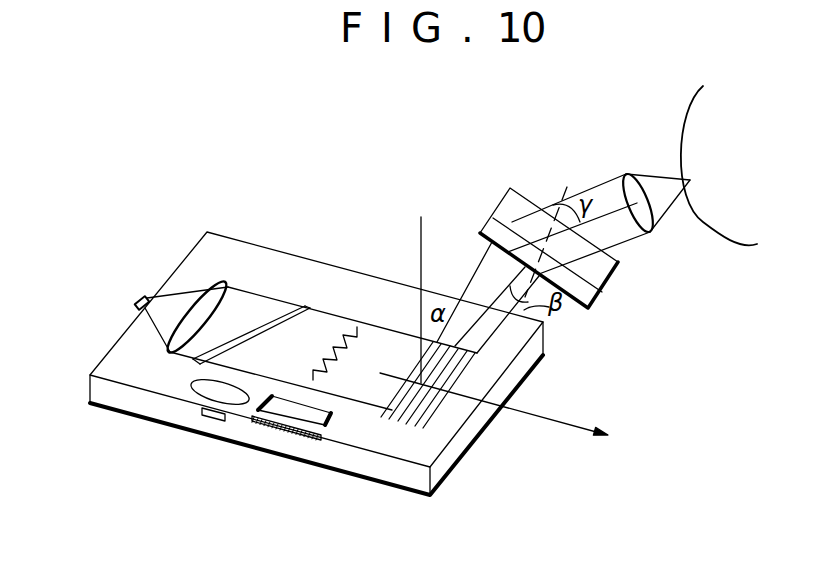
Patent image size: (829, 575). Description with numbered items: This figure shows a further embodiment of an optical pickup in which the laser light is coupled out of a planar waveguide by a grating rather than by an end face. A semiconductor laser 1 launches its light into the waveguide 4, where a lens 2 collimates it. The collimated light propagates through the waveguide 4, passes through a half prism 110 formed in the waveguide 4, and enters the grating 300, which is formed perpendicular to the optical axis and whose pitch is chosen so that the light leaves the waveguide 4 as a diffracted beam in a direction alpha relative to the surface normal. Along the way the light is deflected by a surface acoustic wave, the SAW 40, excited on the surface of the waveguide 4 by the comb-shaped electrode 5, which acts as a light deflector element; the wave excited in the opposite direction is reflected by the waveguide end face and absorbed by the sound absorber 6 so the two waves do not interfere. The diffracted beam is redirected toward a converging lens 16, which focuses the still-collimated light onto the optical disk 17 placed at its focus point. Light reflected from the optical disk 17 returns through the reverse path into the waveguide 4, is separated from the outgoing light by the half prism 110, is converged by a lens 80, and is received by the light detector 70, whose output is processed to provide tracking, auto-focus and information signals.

The semiconductor laser 1 is at (139, 299).
The lens 2 is at (224, 281).
The waveguide 4 is at (386, 473).
The comb-shaped electrode 5 is at (327, 427).
The sound absorber 6 is at (266, 427).
The converging lens 16 is at (628, 175).
The optical disk 17 is at (738, 232).
The SAW 40 is at (592, 307).
The light detector 70 is at (208, 420).
The lens 80 is at (197, 393).
The half prism 110 is at (290, 302).
The grating 300 is at (430, 413).